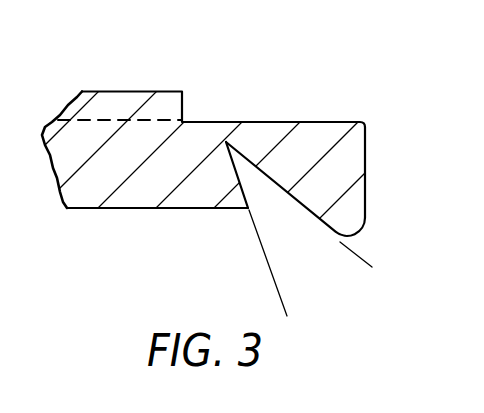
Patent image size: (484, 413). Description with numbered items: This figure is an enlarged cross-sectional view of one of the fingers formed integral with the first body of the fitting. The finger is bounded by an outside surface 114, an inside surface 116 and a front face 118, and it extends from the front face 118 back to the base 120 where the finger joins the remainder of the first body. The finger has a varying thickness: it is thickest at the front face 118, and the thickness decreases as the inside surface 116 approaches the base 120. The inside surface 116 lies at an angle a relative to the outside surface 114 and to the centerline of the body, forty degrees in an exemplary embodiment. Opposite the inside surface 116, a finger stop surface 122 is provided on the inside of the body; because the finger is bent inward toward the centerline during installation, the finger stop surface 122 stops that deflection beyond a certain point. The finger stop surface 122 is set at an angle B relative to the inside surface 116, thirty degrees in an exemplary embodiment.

The outside surface 114 is at (333, 121).
The inside surface 116 is at (276, 200).
The front face 118 is at (374, 189).
The base 120 is at (221, 121).
The finger stop surface 122 is at (238, 202).
The angle a is at (308, 110).
The angle β B is at (358, 268).